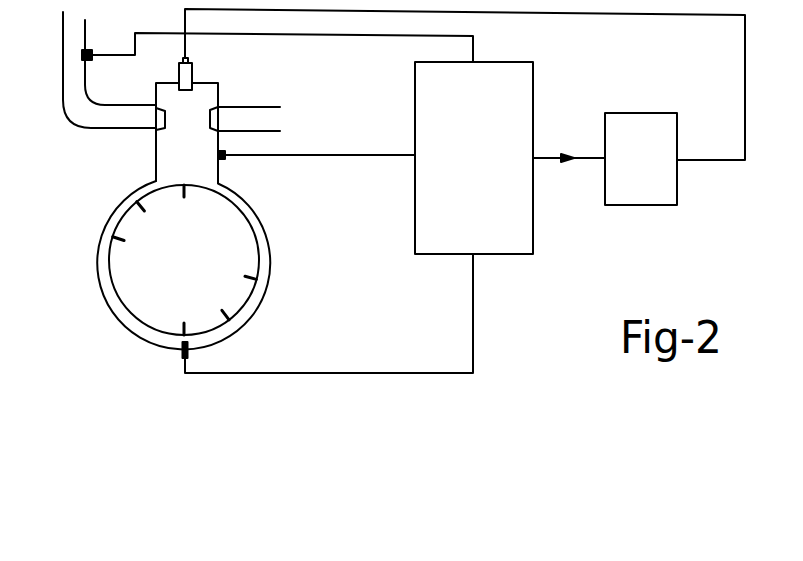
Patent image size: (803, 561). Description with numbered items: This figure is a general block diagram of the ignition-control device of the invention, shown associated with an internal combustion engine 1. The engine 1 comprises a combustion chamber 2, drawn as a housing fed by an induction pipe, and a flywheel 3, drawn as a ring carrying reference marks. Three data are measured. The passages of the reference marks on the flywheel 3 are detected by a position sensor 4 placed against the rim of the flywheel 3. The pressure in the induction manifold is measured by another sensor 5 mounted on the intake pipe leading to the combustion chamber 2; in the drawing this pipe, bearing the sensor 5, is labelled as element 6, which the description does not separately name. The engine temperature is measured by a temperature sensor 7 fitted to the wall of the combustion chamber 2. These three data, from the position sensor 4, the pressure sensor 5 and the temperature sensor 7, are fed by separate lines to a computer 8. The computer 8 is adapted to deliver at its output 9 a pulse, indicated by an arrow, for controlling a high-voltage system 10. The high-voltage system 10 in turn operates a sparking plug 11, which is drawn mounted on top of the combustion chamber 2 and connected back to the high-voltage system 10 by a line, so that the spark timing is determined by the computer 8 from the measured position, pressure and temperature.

The internal combustion engine 1 is at (98, 258).
The combustion chamber 2 is at (200, 105).
The flywheel 3 is at (259, 258).
The position sensor 4 is at (183, 352).
The sensor 5 is at (91, 50).
The inlet pipe 6 is at (73, 128).
The temperature sensor 7 is at (225, 159).
The computer 8 is at (510, 254).
The output 9 is at (533, 160).
The high-voltage system 10 is at (662, 205).
The sparking plug 11 is at (193, 78).